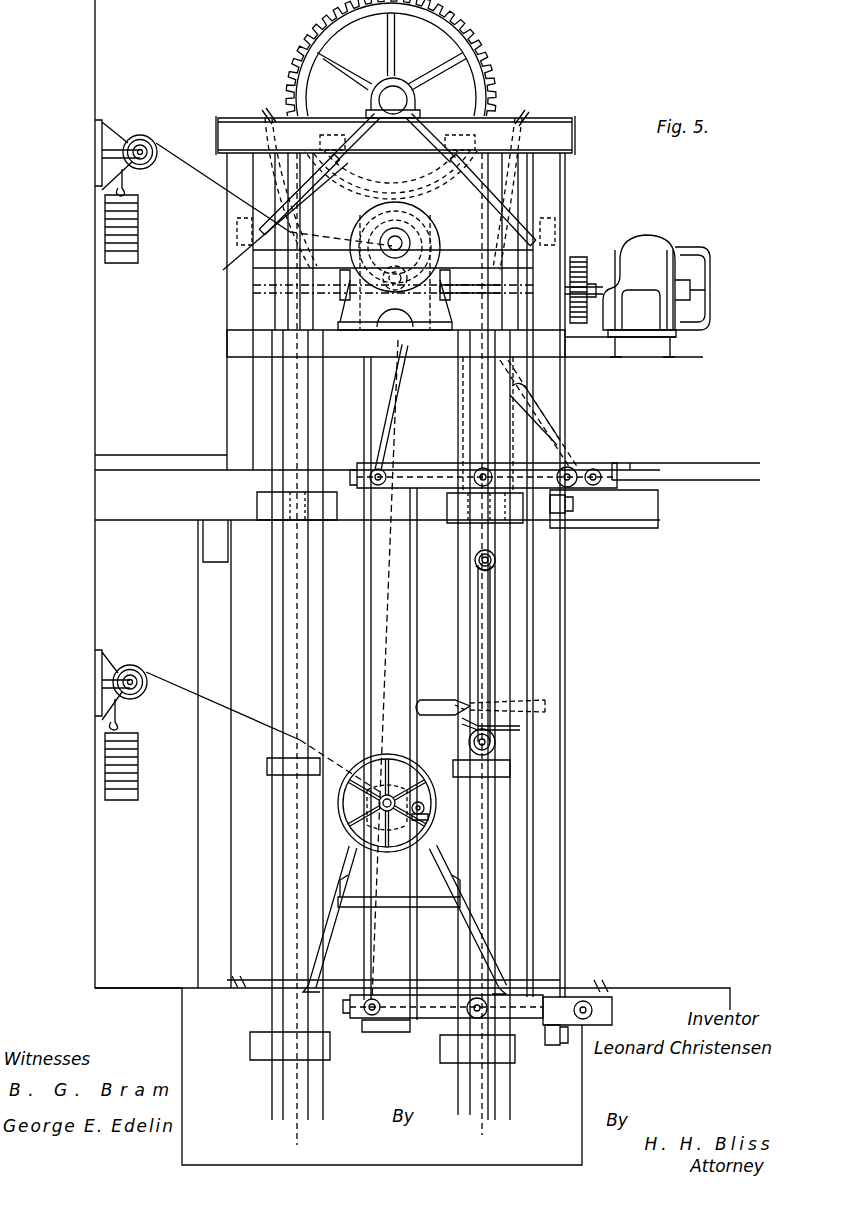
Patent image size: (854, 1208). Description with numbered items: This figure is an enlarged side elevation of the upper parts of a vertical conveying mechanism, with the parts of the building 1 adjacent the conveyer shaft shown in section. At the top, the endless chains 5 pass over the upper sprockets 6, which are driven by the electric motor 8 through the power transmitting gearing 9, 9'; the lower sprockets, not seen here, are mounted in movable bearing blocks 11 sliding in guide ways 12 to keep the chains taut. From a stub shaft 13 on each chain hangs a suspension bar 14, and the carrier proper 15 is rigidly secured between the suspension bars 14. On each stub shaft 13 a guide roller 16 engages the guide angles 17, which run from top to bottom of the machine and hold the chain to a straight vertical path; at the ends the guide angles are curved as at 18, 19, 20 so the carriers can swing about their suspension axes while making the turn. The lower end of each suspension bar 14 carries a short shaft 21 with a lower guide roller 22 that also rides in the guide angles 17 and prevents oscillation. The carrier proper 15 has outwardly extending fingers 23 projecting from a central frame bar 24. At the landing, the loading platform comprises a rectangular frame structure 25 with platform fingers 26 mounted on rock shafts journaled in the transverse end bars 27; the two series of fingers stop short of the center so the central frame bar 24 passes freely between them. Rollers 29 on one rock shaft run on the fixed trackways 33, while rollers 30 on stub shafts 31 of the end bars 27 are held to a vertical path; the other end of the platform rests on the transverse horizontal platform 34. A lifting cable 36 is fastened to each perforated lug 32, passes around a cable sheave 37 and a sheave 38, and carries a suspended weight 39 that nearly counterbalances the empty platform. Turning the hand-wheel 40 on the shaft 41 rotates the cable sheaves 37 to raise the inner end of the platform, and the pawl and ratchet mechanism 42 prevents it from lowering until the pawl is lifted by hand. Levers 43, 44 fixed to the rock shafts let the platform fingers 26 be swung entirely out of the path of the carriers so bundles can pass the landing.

The parts of the building 1 is at (186, 1062).
The endless chains 5 is at (298, 663).
The upper sprockets 6 is at (494, 92).
The electric motor 8 is at (640, 242).
The power transmitting gearing 9 is at (584, 271).
The power transmitting gearing 9' is at (407, 101).
The bearing blocks 11 is at (420, 984).
The guide ways 12 is at (227, 357).
The stub shaft 13 is at (490, 567).
The suspension bars 14 is at (487, 646).
The carrier proper 15 is at (522, 703).
The guide roller 16 is at (495, 560).
The guide angles 17 is at (227, 268).
The curved end of guide angle 18 is at (268, 118).
The curved end of guide angle 19 is at (527, 118).
The curved end of guide angle 20 is at (450, 238).
The short shaft 21 is at (490, 745).
The lower guide roller 22 is at (494, 753).
The outwardly extending fingers 23 is at (548, 706).
The central frame bar 24 is at (472, 723).
The rectangular frame structure 25 is at (550, 414).
The platform fingers 26 is at (443, 496).
The transverse end bars 27 is at (443, 467).
The rollers 29 is at (606, 474).
The rollers 30 is at (532, 1066).
The stub shafts 31 is at (488, 423).
The perforated lugs 32 is at (352, 1009).
The fixed trackways 33 is at (630, 497).
The transverse horizontal platform 34 is at (405, 522).
The lifting cable 36 is at (204, 166).
The cable sheaves 37 is at (392, 1064).
The sheaves 38 is at (143, 136).
The suspended weights 39 is at (140, 484).
The hand-wheel 40 is at (366, 766).
The shaft 41 is at (366, 830).
The pawl and ratchet mechanism 42 is at (416, 800).
The lever 43 is at (577, 467).
The lever 44 is at (390, 441).